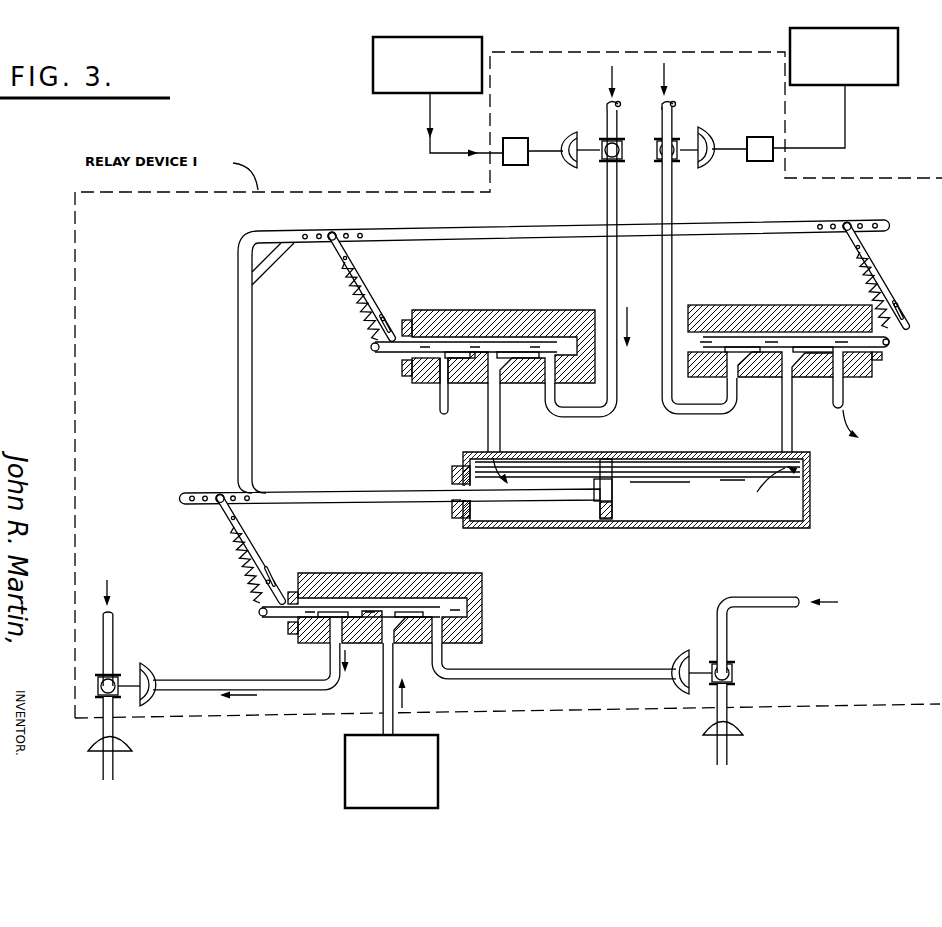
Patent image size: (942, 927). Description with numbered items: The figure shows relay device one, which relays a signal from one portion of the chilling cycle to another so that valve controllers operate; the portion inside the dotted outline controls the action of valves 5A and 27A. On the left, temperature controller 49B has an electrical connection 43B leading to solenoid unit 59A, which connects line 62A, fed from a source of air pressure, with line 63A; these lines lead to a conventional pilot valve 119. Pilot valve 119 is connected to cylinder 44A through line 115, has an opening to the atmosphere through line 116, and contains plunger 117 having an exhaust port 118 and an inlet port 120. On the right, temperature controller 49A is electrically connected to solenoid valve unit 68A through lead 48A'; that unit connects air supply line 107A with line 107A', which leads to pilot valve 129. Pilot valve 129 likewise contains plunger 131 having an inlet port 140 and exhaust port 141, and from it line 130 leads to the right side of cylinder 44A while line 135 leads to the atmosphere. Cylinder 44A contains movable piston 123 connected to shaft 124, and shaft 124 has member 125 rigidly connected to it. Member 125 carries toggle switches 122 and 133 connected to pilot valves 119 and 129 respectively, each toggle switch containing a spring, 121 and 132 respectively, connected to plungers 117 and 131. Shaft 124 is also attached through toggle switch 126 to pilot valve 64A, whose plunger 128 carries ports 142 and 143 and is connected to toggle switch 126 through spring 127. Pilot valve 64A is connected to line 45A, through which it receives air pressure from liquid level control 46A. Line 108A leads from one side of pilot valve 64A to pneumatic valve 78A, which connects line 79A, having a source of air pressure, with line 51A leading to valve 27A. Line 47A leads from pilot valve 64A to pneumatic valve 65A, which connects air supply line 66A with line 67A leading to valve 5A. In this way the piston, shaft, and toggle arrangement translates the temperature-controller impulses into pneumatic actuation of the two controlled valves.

The temperature controller 49B is at (380, 84).
The temperature controller 49A is at (886, 68).
The electrical connection 43B is at (428, 139).
The lead 48A' is at (835, 116).
The solenoid unit 59A is at (565, 181).
The solenoid valve unit 68A is at (687, 152).
The line 62A is at (605, 105).
The line 63A is at (607, 204).
The line 107A is at (685, 112).
The line 107A' is at (689, 273).
The member 125 is at (452, 239).
The toggle switch 122 is at (366, 290).
The spring 121 is at (361, 319).
The plunger 117 is at (388, 354).
The exhaust port 118 is at (450, 356).
The pilot valve 119 is at (561, 312).
The inlet port 120 is at (519, 354).
The line 116 is at (440, 400).
The line 115 is at (490, 432).
The pilot valve 129 is at (713, 312).
The inlet port 140 is at (740, 353).
The exhaust port 141 is at (812, 350).
The plunger 131 is at (889, 347).
The line 130 is at (785, 418).
The line 135 is at (843, 398).
The toggle switch 133 is at (883, 268).
The spring 132 is at (865, 276).
The cylinder 44A is at (808, 488).
The shaft 124 is at (377, 491).
The piston 123 is at (607, 480).
The toggle switch 126 is at (253, 548).
The spring 127 is at (246, 573).
The plunger 128 is at (273, 617).
The pilot valve 64A is at (483, 586).
The port 142 is at (340, 620).
The port 143 is at (410, 620).
The line 108A is at (298, 680).
The pneumatic valve 78A is at (128, 684).
The line 79A is at (111, 633).
The line 51A is at (109, 728).
The valve 27A is at (131, 747).
The line 45A is at (384, 692).
The liquid level control 46A is at (423, 763).
The line 47A is at (535, 678).
The pneumatic valve 65A is at (709, 665).
The line 66A is at (763, 600).
The line 67A is at (727, 708).
The valve 5A is at (717, 730).